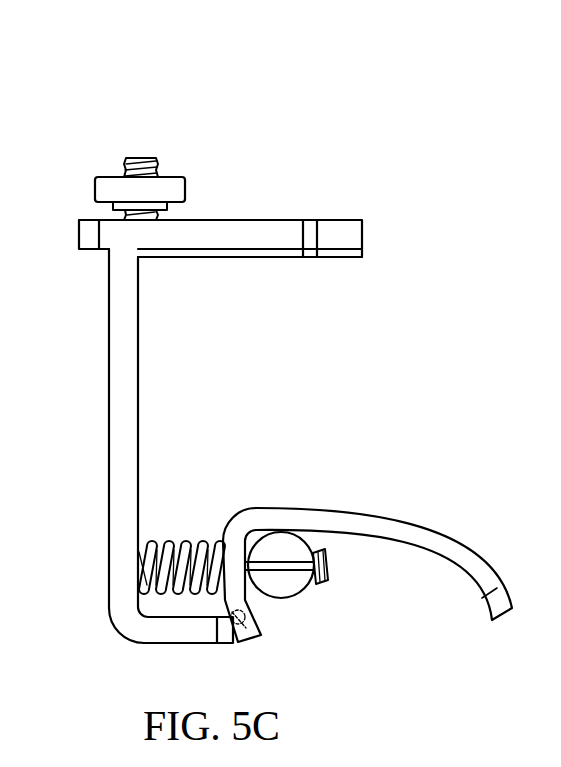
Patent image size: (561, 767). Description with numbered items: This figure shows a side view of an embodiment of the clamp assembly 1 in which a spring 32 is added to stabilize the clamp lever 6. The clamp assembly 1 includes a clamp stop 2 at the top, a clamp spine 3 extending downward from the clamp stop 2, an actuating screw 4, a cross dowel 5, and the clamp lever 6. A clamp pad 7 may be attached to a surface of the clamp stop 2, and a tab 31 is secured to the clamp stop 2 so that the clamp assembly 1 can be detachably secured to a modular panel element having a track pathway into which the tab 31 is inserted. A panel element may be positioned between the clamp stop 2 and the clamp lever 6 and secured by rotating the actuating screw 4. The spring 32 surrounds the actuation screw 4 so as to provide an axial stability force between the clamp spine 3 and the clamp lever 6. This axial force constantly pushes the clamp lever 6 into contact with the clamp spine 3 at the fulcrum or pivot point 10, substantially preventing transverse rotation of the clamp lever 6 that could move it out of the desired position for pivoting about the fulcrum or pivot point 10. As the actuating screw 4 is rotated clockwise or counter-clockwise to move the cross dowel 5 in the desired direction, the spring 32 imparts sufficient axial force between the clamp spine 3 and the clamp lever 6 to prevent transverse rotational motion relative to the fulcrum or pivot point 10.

The clamp assembly 1 is at (151, 93).
The clamp stop 2 is at (272, 220).
The clamp spine 3 is at (110, 350).
The actuating screw 4 is at (330, 571).
The cross dowel 5 is at (288, 598).
The clamp lever 6 is at (398, 512).
The clamp pad 7 is at (335, 258).
The fulcrum or pivot point 10 is at (246, 640).
The tab 31 is at (95, 187).
The spring 32 is at (166, 547).